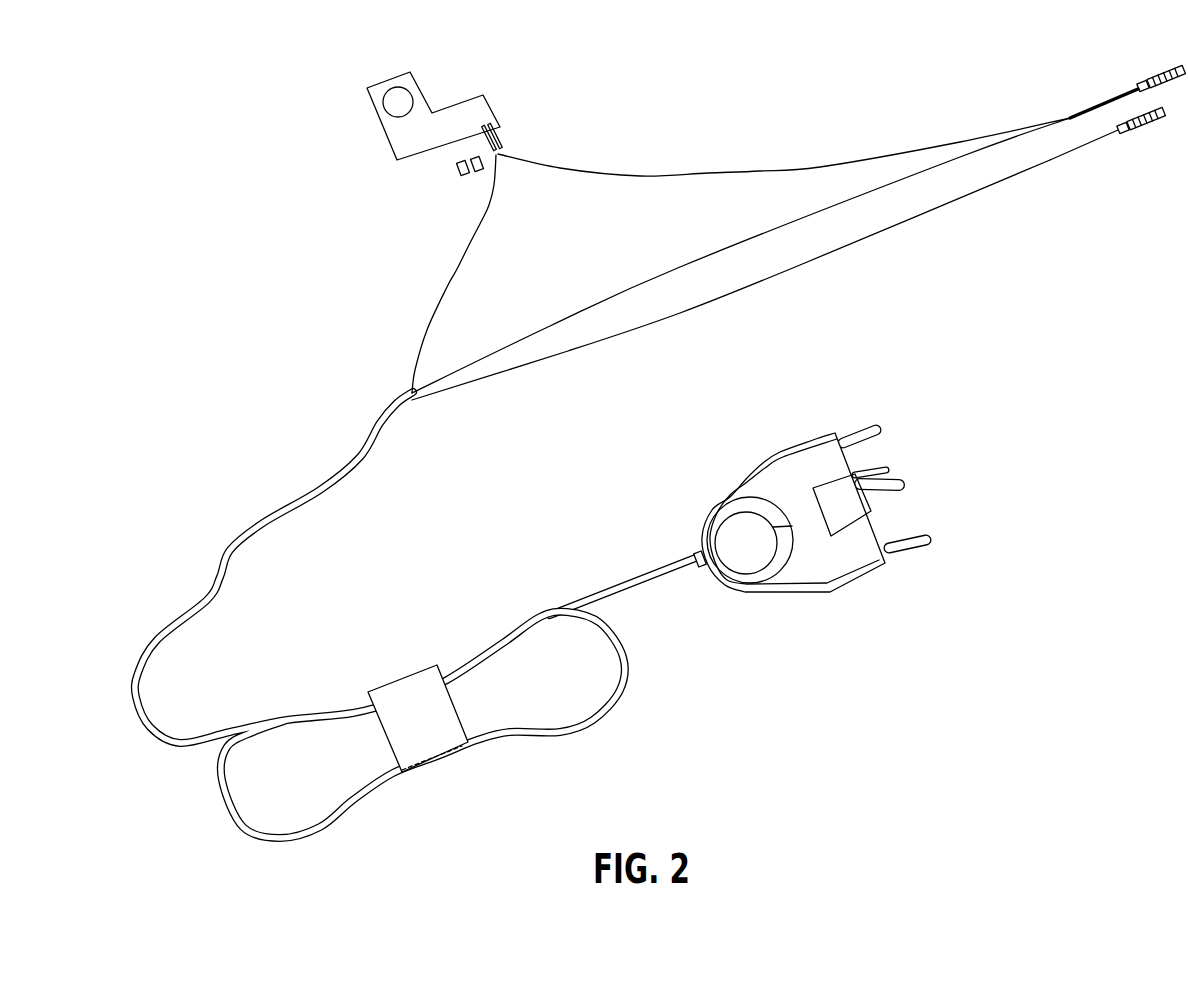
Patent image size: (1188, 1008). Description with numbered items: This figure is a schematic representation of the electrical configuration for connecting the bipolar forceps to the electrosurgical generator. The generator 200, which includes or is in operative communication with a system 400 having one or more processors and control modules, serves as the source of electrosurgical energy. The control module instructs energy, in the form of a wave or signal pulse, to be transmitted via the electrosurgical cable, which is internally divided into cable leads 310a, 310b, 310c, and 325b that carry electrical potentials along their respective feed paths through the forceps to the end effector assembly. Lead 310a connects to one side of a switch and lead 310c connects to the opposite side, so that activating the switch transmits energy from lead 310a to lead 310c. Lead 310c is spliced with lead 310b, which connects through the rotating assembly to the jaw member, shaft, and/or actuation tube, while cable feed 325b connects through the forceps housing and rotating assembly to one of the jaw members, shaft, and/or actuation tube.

The generator 200 is at (368, 106).
The system 400 is at (403, 97).
The cable lead 310a is at (457, 269).
The cable lead 310b is at (550, 326).
The cable lead 310c is at (708, 173).
The cable feed 325b is at (568, 351).